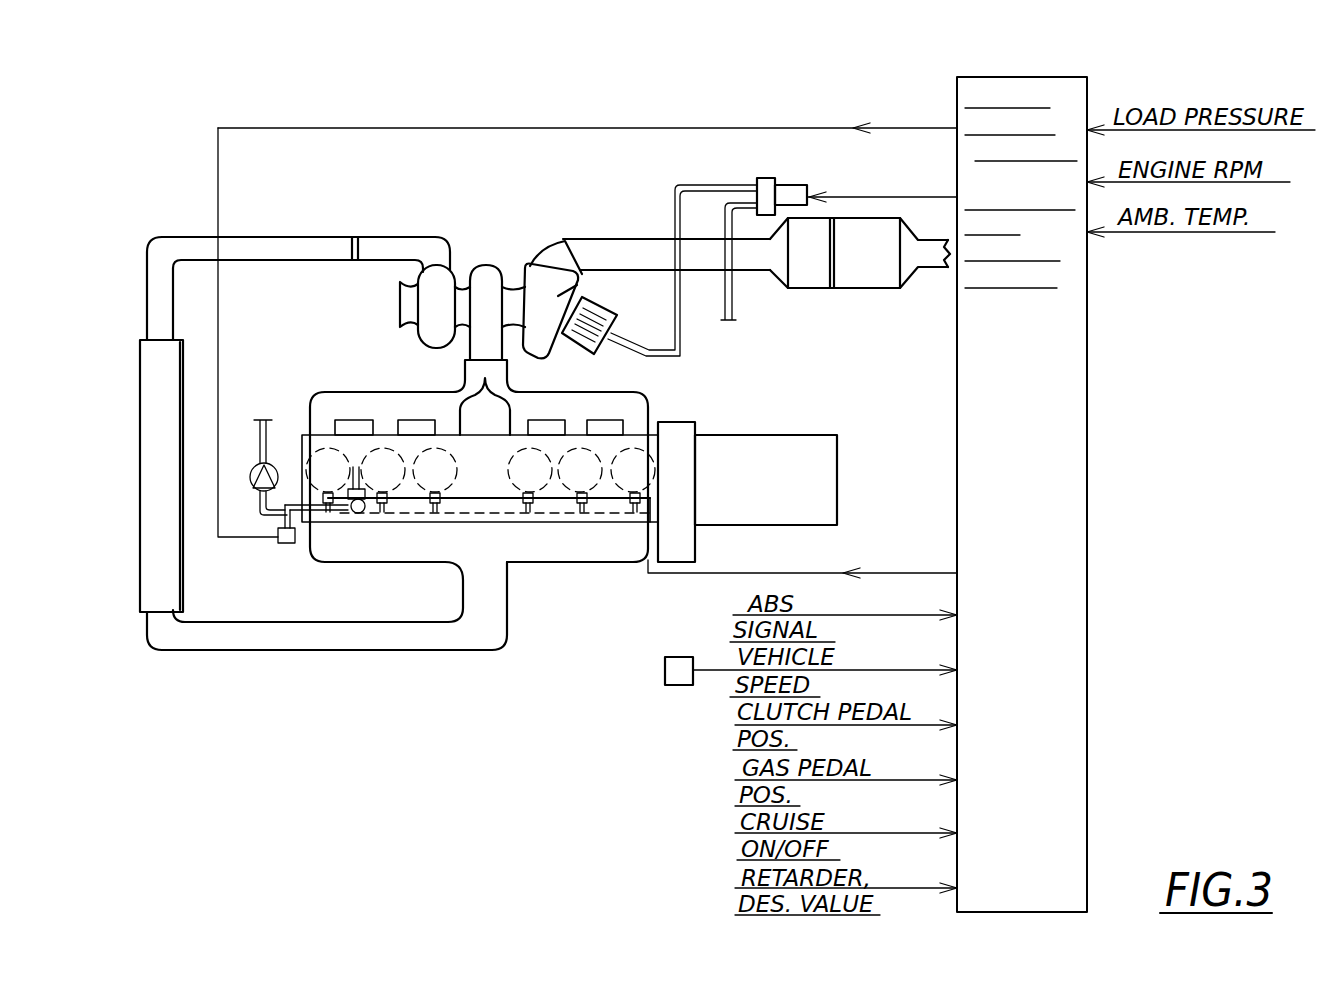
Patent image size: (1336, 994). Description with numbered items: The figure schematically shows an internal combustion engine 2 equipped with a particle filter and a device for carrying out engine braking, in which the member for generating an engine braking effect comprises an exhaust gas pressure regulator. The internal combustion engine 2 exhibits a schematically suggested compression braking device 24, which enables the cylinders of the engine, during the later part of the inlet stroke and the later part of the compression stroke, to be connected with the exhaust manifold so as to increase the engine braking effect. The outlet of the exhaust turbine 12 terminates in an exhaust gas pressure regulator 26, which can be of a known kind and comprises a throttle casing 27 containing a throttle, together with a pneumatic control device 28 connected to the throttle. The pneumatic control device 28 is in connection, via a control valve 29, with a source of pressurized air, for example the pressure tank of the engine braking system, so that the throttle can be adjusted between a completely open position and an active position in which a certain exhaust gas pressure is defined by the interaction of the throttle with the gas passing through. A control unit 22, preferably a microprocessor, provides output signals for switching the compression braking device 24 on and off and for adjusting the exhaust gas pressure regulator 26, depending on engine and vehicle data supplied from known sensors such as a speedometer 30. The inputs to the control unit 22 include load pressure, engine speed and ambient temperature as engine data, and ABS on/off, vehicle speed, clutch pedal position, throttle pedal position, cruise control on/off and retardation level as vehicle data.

The internal combustion engine 2 is at (473, 483).
The exhaust turbine 12 is at (485, 277).
The control unit 22 is at (1037, 400).
The compression braking device 24 is at (344, 517).
The exhaust gas pressure regulator 26 is at (537, 243).
The throttle casing 27 is at (582, 274).
The pneumatic control device 28 is at (608, 310).
The control valve 29 is at (788, 185).
The speedometer 30 is at (665, 668).